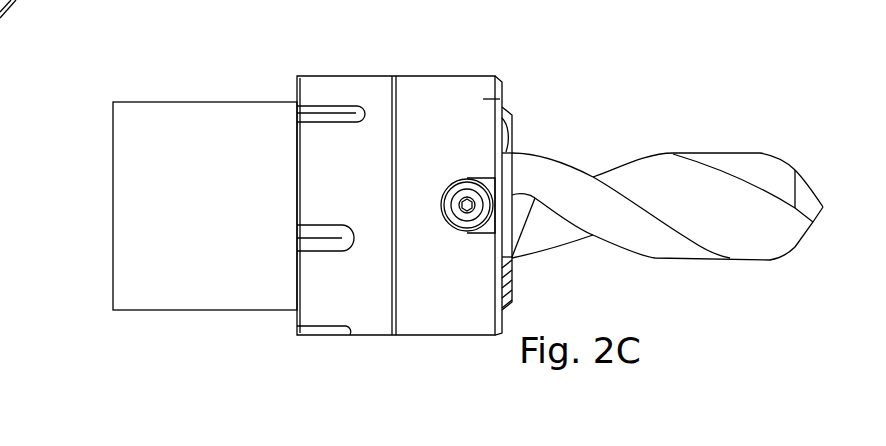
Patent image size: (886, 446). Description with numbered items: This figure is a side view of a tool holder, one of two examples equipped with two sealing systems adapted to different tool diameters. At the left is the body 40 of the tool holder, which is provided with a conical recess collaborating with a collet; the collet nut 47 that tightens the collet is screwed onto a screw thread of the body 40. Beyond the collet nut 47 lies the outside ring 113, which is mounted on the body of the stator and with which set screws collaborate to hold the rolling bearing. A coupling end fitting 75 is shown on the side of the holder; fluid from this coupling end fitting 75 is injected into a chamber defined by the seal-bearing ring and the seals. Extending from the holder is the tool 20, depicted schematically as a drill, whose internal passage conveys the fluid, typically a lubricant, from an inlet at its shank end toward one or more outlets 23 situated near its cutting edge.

The body 40 is at (155, 116).
The collet nut 47 is at (327, 86).
The outside ring 113 is at (500, 99).
The coupling end fitting 75 is at (451, 224).
The tool 20 is at (646, 146).
The outlet 23 is at (811, 207).